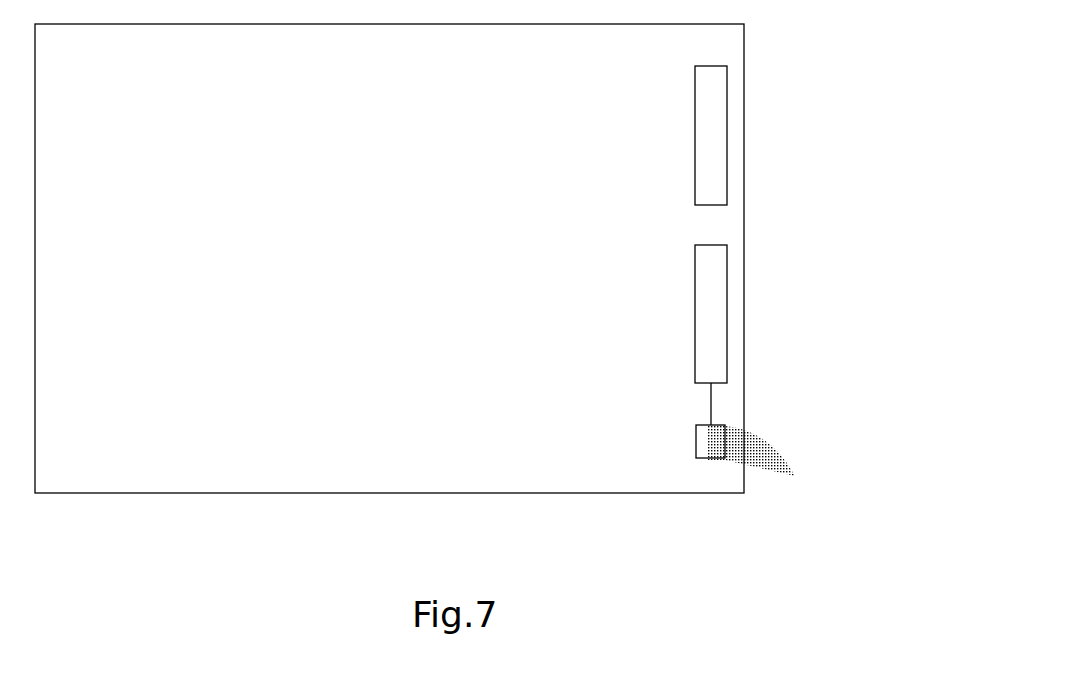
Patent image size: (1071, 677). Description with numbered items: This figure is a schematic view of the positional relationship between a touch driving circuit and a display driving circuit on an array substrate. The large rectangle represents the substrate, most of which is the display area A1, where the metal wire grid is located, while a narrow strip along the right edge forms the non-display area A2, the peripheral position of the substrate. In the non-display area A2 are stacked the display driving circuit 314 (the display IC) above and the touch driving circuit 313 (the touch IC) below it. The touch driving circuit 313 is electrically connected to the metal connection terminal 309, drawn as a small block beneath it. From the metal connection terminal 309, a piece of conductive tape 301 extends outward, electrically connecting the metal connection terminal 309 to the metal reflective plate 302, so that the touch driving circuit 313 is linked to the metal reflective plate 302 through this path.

The metal reflective plate 302 is at (638, 35).
The display driving circuit 314 is at (727, 135).
The touch driving circuit 313 is at (727, 315).
The metal connection terminal 309 is at (717, 425).
The conductive tape 301 is at (757, 463).
The display area A1 is at (378, 464).
The non-display area A2 is at (705, 470).